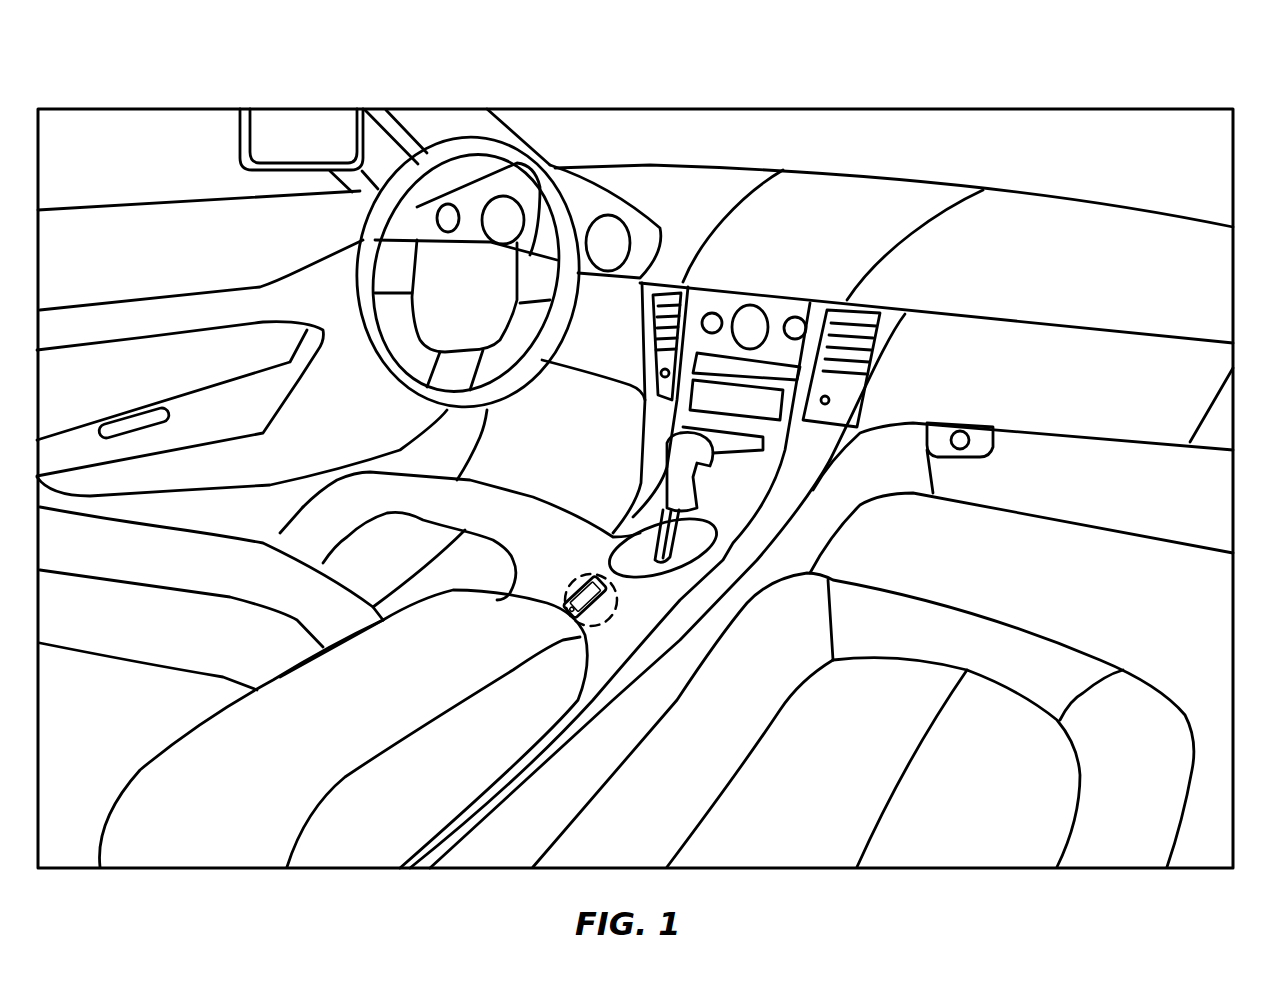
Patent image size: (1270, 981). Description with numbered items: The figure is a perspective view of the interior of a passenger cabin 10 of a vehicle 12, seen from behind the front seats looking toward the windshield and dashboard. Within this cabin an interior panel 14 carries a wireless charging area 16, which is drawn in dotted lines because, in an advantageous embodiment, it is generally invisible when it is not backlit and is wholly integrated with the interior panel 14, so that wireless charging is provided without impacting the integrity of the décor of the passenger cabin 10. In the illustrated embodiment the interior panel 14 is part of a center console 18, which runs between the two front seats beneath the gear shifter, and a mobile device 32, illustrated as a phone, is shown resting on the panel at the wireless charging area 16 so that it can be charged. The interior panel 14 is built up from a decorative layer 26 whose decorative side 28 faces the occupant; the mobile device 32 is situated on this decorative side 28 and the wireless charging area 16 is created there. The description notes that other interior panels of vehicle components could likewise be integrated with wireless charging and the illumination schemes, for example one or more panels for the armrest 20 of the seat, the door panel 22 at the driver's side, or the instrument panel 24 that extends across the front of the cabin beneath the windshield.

The passenger cabin 10 is at (672, 92).
The vehicle 12 is at (794, 78).
The interior panel 14 is at (605, 545).
The wireless charging area 16 is at (560, 603).
The center console 18 is at (633, 523).
The armrest 20 is at (363, 657).
The door panel 22 is at (145, 222).
The instrument panel 24 is at (650, 178).
The decorative layer 26 is at (727, 531).
The decorative side 28 is at (748, 482).
The mobile device 32 is at (585, 610).